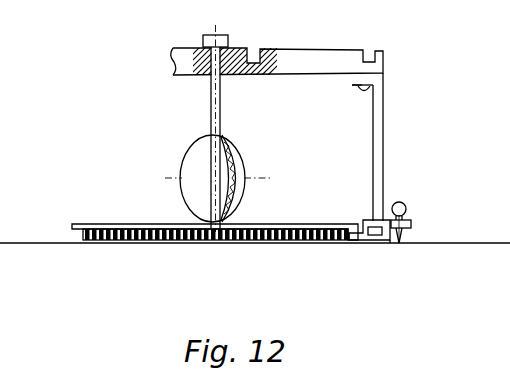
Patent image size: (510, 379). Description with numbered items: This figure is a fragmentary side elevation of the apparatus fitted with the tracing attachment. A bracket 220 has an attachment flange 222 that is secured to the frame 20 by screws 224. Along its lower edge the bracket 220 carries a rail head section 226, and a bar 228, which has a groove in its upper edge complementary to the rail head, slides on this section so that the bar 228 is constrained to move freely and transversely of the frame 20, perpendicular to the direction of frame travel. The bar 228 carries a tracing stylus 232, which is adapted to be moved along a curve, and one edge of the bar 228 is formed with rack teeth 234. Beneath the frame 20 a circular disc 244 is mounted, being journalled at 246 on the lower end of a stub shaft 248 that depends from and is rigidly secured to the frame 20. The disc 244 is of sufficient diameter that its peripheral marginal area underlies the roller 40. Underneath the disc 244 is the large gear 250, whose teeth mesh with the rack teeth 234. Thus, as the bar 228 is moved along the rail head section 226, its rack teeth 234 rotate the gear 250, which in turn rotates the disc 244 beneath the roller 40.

The frame 20 is at (296, 60).
The roller 40 is at (180, 157).
The bracket 220 is at (383, 101).
The attachment flange 222 is at (355, 85).
The screws 224 is at (358, 92).
The rail head section 226 is at (377, 231).
The bar 228 is at (385, 241).
The tracing stylus 232 is at (411, 237).
The rack teeth 234 is at (352, 242).
The circular disc 244 is at (143, 225).
The journal 246 is at (232, 224).
The stub shaft 248 is at (220, 113).
The gear 250 is at (74, 228).